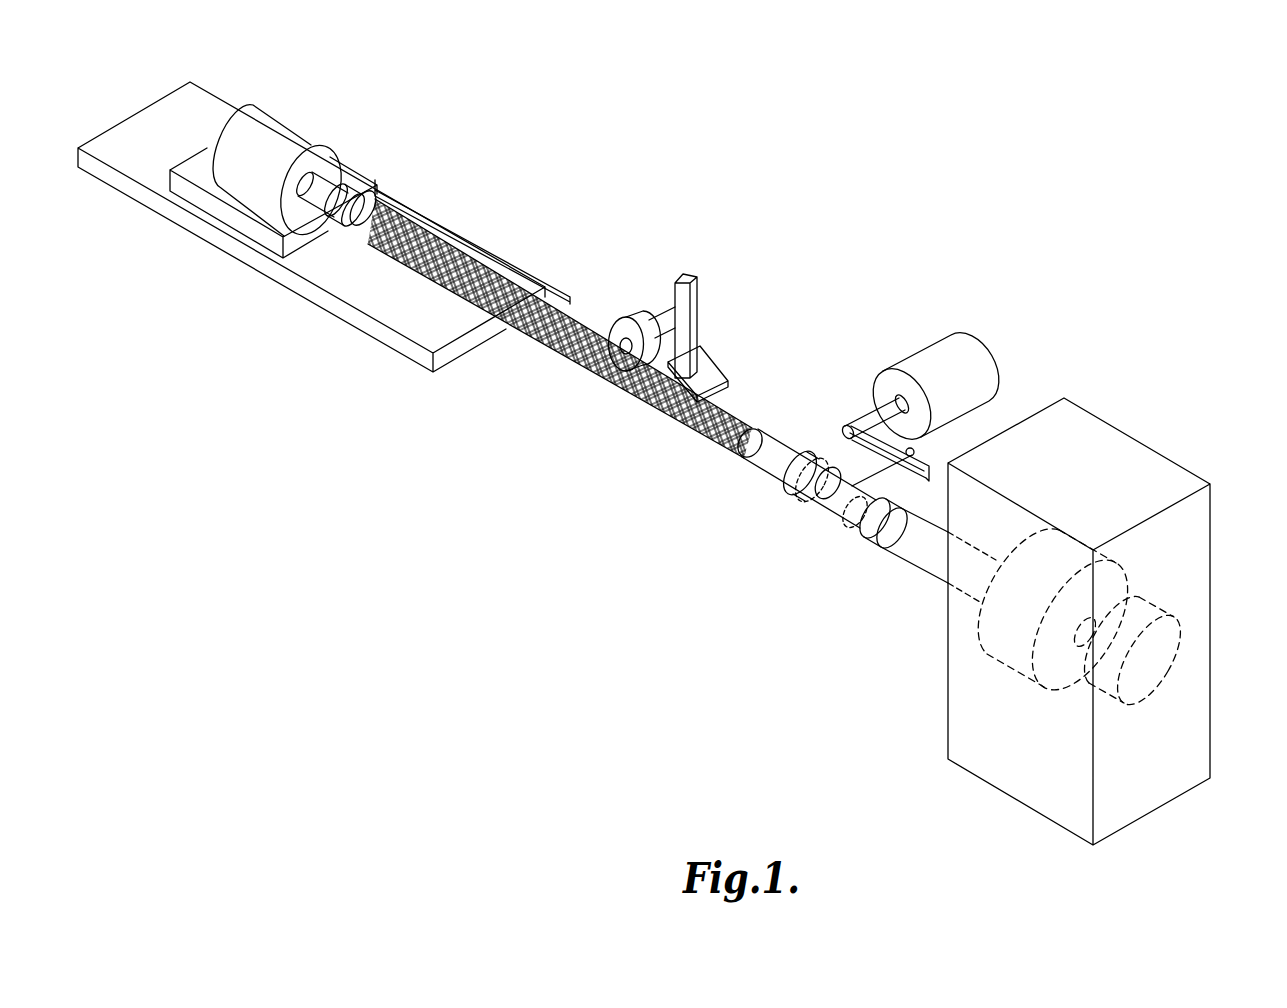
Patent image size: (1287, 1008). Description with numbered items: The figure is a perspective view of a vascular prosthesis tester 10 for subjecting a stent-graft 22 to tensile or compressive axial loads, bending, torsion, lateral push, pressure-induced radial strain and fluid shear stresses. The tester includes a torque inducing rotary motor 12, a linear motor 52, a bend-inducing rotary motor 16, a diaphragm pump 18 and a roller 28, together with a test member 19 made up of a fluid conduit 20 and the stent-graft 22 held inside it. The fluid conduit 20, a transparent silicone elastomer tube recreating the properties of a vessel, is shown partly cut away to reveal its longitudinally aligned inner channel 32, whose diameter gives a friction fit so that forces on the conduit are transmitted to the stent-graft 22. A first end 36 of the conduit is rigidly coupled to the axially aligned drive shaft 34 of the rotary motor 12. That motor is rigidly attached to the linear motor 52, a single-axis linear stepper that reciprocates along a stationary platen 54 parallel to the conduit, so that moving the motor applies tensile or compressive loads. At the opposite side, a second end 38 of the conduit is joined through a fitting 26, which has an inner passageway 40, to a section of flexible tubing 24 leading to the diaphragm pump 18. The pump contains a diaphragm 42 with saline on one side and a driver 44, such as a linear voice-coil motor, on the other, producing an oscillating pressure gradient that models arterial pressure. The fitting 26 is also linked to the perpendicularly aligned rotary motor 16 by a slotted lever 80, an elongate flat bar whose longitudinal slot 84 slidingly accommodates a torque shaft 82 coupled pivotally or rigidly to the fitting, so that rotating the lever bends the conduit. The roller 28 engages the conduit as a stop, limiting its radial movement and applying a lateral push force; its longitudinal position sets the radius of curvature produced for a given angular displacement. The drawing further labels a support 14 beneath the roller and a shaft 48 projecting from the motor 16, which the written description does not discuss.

The vascular prosthesis tester 10 is at (926, 167).
The torque inducing rotary motor 12 is at (285, 133).
The support stand 14 is at (690, 295).
The bend-inducing rotary motor 16 is at (945, 346).
The diaphragm pump 18 is at (1100, 440).
The test member 19 is at (608, 387).
The fluid conduit 20 is at (753, 477).
The stent-graft 22 is at (456, 257).
The flexible tubing 24 is at (915, 568).
The fitting 26 is at (833, 505).
The roller 28 is at (621, 320).
The inner channel 32 is at (768, 447).
The drive shaft 34 is at (325, 175).
The first end 36 is at (337, 212).
The second end 38 is at (800, 494).
The inner passageway 40 is at (858, 510).
The diaphragm 42 is at (993, 648).
The driver 44 is at (1160, 636).
The motor shaft 48 is at (873, 418).
The linear motor 52 is at (212, 205).
The stationary platen 54 is at (350, 317).
The slotted lever 80 is at (920, 457).
The torque shaft 82 is at (853, 462).
The slot 84 is at (897, 474).